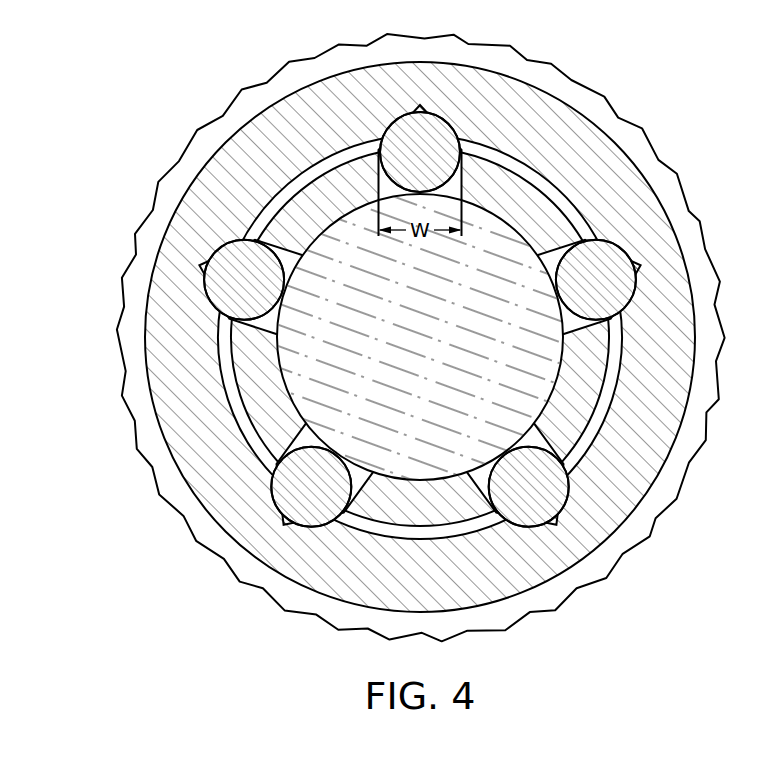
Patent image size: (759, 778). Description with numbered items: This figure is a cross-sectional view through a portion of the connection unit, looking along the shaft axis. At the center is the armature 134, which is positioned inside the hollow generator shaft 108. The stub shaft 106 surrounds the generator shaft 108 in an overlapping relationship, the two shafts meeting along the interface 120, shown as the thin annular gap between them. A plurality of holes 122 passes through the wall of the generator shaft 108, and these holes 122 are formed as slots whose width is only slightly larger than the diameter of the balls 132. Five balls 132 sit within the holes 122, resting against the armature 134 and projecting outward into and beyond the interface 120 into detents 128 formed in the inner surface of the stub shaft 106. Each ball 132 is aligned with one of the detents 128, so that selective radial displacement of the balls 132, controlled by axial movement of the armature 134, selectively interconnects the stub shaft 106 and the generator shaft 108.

The stub shaft 106 is at (585, 146).
The generator shaft 108 is at (566, 378).
The interface 120 is at (418, 534).
The holes 122 is at (374, 174).
The detents 128 is at (461, 131).
The balls 132 is at (405, 128).
The armature 134 is at (437, 351).